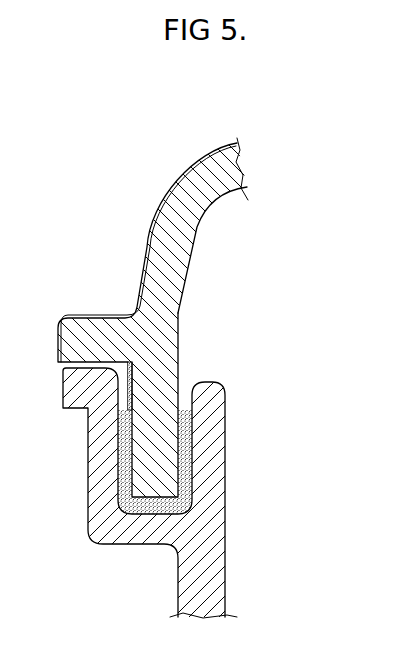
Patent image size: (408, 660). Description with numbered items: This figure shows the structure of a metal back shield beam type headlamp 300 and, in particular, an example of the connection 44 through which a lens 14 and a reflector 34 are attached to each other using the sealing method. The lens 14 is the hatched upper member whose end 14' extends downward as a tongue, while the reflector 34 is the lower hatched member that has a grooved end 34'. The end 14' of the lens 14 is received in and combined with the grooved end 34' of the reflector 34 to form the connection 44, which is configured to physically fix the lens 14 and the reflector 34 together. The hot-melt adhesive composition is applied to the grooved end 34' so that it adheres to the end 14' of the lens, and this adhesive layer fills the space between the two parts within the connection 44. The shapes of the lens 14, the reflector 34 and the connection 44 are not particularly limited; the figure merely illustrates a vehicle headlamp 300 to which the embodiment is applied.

The headlamp 300 is at (354, 104).
The lens 14 is at (204, 319).
The end of the lens 14' is at (221, 405).
The reflector 34 is at (204, 490).
The grooved end of the reflector 34' is at (250, 499).
The connection 44 is at (316, 418).